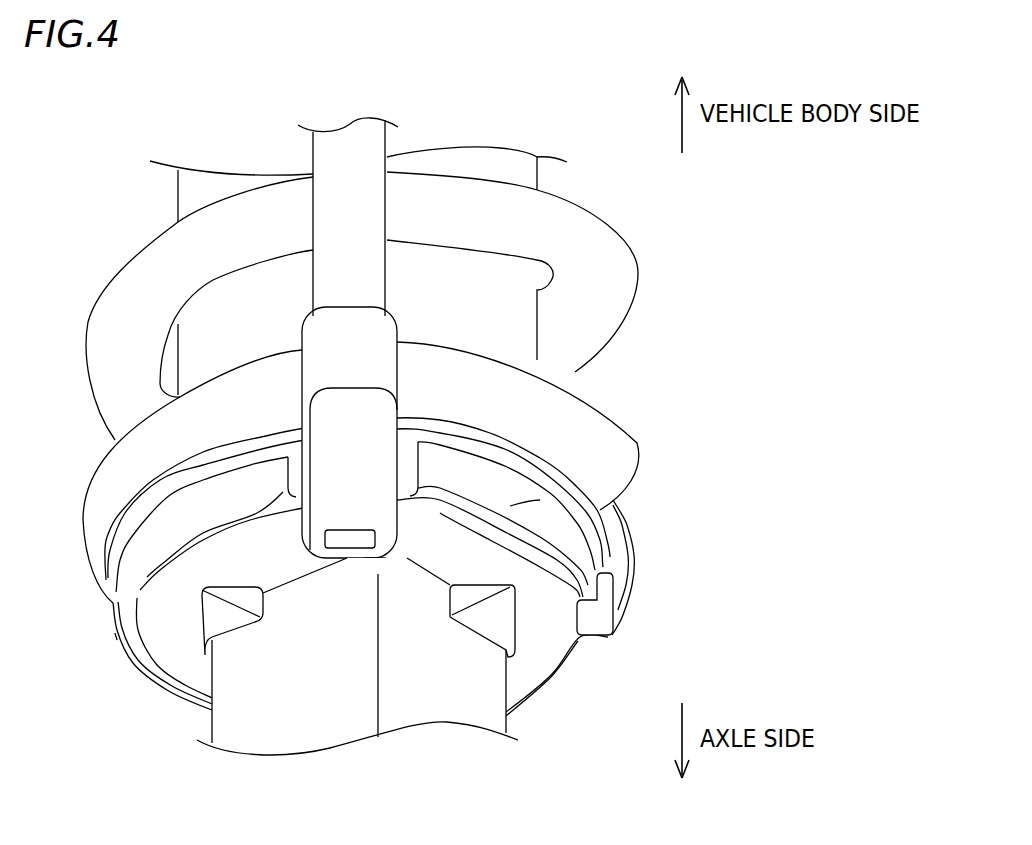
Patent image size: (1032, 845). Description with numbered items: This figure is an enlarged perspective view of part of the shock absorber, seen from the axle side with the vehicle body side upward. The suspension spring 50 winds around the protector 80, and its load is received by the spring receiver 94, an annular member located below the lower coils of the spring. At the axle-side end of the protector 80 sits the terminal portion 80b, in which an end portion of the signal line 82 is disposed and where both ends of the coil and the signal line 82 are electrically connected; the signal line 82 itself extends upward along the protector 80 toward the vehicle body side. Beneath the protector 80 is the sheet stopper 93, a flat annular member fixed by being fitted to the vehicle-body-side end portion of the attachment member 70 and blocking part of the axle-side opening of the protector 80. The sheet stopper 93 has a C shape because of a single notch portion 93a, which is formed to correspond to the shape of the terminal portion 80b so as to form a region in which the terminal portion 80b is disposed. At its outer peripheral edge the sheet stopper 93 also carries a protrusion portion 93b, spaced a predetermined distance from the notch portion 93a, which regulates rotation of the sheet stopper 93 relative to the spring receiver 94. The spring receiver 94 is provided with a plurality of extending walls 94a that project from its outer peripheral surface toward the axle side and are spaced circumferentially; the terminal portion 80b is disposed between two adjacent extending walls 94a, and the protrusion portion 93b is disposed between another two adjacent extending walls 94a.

The suspension spring 50 is at (638, 273).
The attachment member 70 is at (508, 724).
The protector 80 is at (516, 365).
The terminal portion 80b is at (360, 427).
The signal line 82 is at (387, 138).
The sheet stopper 93 is at (513, 555).
The notch portion 93a is at (400, 505).
The protrusion portion 93b is at (613, 612).
The spring receiver 94 is at (113, 603).
The extending walls 94a is at (116, 633).